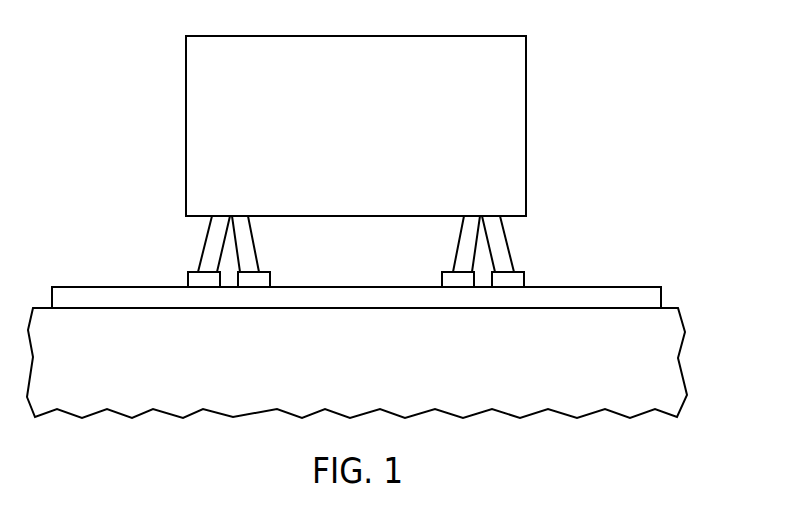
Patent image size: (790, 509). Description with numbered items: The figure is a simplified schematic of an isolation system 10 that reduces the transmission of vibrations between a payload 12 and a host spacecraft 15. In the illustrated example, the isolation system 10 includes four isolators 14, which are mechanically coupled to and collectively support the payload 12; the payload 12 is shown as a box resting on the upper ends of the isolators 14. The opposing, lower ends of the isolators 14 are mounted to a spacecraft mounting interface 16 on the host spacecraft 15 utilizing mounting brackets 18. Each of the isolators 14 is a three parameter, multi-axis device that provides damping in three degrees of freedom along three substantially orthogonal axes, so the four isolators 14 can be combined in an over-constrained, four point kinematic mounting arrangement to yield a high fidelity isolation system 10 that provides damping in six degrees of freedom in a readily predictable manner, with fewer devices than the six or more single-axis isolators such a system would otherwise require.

The isolation system 10 is at (140, 219).
The payload 12 is at (352, 43).
The isolators 14 is at (207, 250).
The host spacecraft 15 is at (228, 405).
The spacecraft mounting interface 16 is at (73, 295).
The mounting brackets 18 is at (196, 279).